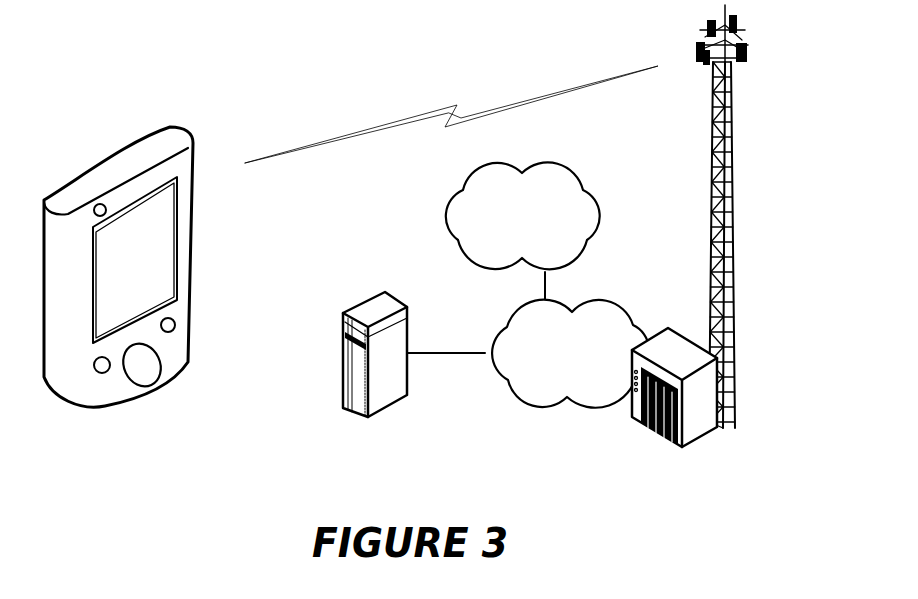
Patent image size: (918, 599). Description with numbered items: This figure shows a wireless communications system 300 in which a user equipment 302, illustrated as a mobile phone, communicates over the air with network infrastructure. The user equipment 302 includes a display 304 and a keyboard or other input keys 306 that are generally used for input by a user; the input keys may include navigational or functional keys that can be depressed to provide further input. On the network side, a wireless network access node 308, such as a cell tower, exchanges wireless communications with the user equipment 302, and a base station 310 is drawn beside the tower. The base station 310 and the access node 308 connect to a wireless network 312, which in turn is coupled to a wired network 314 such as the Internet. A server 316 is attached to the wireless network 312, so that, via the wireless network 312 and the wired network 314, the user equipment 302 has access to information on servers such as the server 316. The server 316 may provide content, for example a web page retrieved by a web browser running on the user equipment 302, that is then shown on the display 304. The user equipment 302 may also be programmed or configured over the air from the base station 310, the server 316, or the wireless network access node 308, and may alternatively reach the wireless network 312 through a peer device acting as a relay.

The communication system 300 is at (243, 90).
The user equipment 302 is at (118, 405).
The display 304 is at (198, 188).
The input keys 306 is at (198, 262).
The wireless network access node 308 is at (737, 420).
The wireless base station 310 is at (647, 428).
The wireless network 312 is at (570, 354).
The wired network 314 is at (523, 231).
The server 316 is at (378, 415).